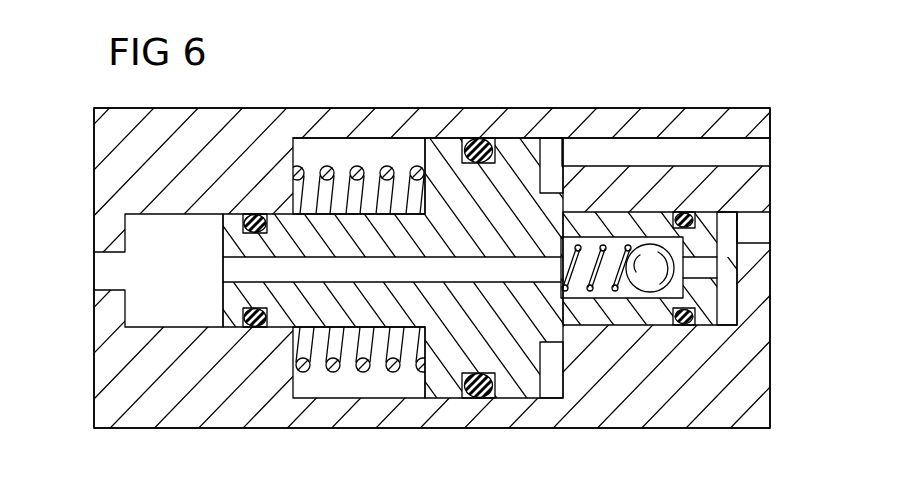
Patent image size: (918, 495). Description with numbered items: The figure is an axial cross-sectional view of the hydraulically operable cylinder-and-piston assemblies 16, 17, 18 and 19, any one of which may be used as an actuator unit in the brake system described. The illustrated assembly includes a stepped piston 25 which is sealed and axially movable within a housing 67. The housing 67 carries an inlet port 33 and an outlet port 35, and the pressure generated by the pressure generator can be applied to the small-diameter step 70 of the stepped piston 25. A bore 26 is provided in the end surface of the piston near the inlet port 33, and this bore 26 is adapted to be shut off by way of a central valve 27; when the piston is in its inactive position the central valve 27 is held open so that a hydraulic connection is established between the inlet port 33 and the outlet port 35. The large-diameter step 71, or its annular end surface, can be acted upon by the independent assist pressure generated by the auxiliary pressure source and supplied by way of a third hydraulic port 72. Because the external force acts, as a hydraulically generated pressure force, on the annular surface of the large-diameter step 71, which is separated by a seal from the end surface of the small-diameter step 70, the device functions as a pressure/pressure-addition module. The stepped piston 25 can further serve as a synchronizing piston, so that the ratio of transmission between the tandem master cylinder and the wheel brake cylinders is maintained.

The cylinder-and-piston assembly 16 is at (432, 223).
The cylinder-and-piston assembly 17 is at (432, 223).
The cylinder-and-piston assembly 18 is at (432, 223).
The cylinder-and-piston assembly 19 is at (466, 96).
The stepped piston 25 is at (453, 362).
The bore 26 is at (228, 277).
The central valve 27 is at (708, 295).
The inlet port 33 is at (755, 232).
The outlet port 35 is at (105, 272).
The housing 67 is at (735, 402).
The small-diameter step 70 is at (632, 320).
The large-diameter step 71 is at (527, 392).
The third hydraulic port 72 is at (755, 152).